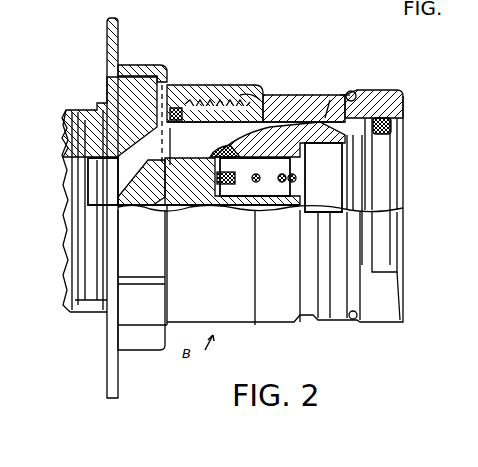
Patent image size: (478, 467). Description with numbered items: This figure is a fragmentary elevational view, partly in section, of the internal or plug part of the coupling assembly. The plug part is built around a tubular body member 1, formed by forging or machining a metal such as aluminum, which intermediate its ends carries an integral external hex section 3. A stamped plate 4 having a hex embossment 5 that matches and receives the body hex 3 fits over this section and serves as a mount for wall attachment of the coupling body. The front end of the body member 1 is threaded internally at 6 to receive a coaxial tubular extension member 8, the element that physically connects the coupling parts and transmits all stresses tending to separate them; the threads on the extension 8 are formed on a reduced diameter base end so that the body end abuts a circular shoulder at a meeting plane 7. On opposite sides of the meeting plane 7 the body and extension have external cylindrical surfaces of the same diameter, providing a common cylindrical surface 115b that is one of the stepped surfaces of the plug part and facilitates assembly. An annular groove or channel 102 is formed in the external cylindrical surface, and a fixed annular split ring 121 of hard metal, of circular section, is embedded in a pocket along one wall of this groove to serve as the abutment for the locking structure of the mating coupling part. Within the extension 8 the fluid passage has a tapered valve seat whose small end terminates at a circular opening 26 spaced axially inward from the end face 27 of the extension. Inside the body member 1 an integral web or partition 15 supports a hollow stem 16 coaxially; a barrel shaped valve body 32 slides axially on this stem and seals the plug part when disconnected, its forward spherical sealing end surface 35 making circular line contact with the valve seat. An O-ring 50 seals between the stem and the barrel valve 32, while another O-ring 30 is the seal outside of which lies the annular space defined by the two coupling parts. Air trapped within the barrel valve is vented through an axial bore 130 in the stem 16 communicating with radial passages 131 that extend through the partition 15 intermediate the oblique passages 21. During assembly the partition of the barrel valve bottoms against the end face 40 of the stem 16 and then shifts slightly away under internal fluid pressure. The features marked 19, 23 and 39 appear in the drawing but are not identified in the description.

The tubular body member 1 is at (98, 104).
The external hex section 3 is at (105, 102).
The plate 4 is at (118, 30).
The hex embossment 5 is at (132, 65).
The internal threads 6 is at (197, 100).
The meeting plane 7 is at (258, 95).
The tubular extension member 8 is at (308, 98).
The web or partition 15 is at (128, 186).
The hollow stem 16 is at (193, 185).
The threads 19 is at (230, 100).
The oblique passages 21 is at (120, 167).
The valve block 23 is at (341, 140).
The circular opening 26 is at (352, 185).
The end face 27 is at (404, 100).
The O-ring 30 is at (385, 128).
The barrel shaped valve body 32 is at (326, 100).
The spherical sealing end surface 35 is at (368, 165).
The housing 39 is at (234, 208).
The end face of the stem 40 is at (252, 170).
The O-ring 50 is at (214, 152).
The annular groove or channel 102 is at (342, 96).
The common cylindrical surface 115b is at (375, 96).
The fixed annular split ring 121 is at (351, 90).
The axial bore 130 is at (190, 210).
The radial passages 131 is at (156, 157).